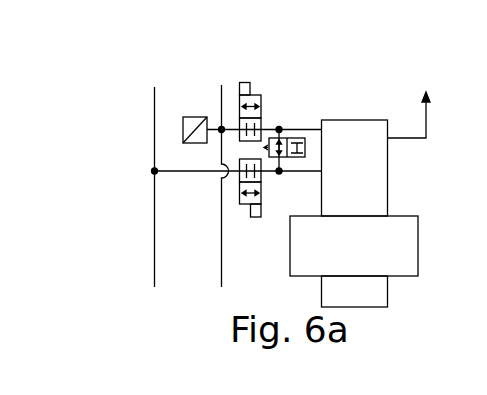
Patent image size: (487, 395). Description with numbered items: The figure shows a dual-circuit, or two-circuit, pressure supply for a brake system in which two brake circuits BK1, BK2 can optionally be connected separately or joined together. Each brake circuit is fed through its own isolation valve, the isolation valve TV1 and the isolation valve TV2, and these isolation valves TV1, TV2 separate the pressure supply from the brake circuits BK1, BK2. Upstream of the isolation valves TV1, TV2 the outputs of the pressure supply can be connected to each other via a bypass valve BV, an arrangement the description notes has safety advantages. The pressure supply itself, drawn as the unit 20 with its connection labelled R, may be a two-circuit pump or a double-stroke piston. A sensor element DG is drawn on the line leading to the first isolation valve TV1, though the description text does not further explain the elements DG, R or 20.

The pressure sensor DG is at (203, 117).
The isolation valve TV1 is at (261, 112).
The isolation valve TV2 is at (261, 198).
The bypass valve BV is at (282, 128).
The brake circuit BK1 is at (222, 268).
The brake circuit BK2 is at (155, 229).
The return direction R is at (422, 111).
The brake actuator 20 is at (404, 209).